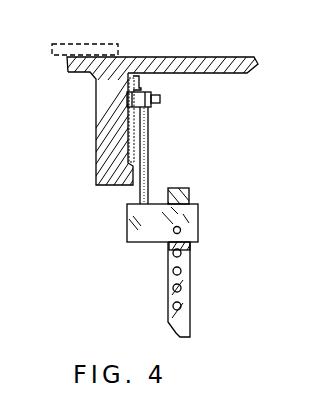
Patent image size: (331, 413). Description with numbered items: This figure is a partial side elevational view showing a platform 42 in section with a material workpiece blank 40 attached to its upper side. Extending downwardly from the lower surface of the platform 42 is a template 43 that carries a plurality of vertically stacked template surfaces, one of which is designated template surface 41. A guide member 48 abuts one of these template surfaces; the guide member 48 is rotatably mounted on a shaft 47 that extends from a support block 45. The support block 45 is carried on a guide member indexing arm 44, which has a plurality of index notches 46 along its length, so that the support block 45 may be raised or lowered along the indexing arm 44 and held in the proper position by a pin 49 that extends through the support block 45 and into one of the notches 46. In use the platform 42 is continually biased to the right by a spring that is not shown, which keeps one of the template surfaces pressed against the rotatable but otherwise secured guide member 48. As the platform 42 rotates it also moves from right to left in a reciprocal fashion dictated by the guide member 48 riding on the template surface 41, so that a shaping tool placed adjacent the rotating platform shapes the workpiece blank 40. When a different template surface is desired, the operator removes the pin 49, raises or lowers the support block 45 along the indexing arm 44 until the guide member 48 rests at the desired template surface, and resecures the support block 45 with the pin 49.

The material workpiece blank 40 is at (89, 44).
The template surface 41 is at (143, 126).
The platform 42 is at (192, 57).
The template 43 is at (97, 134).
The guide member indexing arm 44 is at (191, 255).
The support block 45 is at (127, 220).
The index notches 46 is at (178, 288).
The shaft 47 is at (149, 163).
The guide member 48 is at (160, 98).
The pin 49 is at (181, 229).